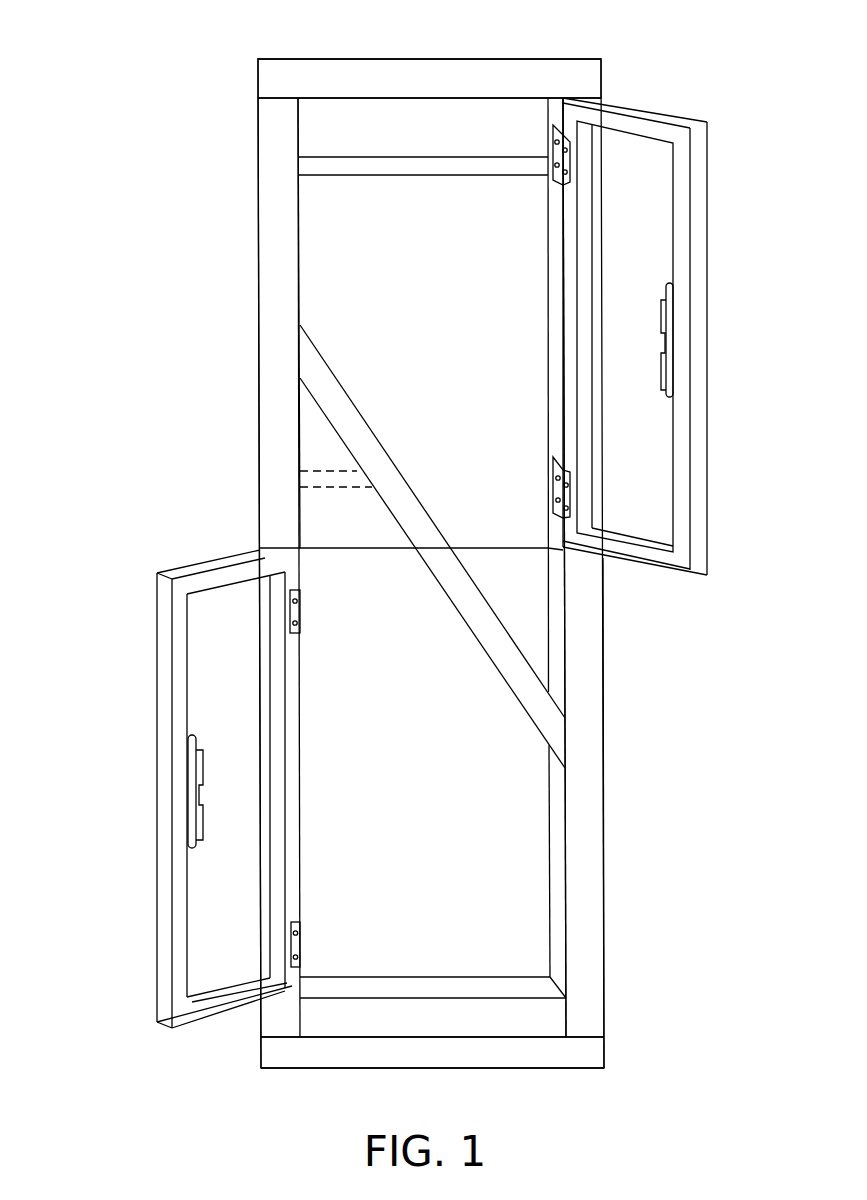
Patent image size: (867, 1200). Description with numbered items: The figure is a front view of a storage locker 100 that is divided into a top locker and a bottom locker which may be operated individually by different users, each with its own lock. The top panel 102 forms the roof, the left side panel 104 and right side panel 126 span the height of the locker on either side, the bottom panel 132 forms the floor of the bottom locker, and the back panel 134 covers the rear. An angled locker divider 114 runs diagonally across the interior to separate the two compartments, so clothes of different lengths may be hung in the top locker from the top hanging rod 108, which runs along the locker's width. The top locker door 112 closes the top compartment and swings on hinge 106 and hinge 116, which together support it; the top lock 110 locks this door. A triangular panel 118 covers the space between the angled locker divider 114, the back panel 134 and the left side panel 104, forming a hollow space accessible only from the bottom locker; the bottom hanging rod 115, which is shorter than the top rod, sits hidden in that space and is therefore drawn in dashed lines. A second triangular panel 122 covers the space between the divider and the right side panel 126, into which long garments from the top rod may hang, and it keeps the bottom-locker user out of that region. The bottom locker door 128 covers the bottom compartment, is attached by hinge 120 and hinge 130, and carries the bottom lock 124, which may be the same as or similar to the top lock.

The locker 100 is at (353, 37).
The top panel 102 is at (389, 62).
The left side panel 104 is at (257, 113).
The hinge 106 is at (567, 164).
The top hanging rod 108 is at (312, 175).
The top lock 110 is at (667, 310).
The top locker door 112 is at (703, 407).
The angled locker divider 114 is at (312, 397).
The bottom hanging rod 115 is at (310, 490).
The hinge 116 is at (570, 507).
The triangular panel 118 is at (333, 533).
The hinge 120 is at (300, 633).
The triangular panel 122 is at (538, 645).
The bottom lock 124 is at (193, 780).
The right side panel 126 is at (604, 777).
The bottom locker door 128 is at (157, 862).
The hinge 130 is at (287, 928).
The bottom panel 132 is at (308, 993).
The back panel 134 is at (520, 894).